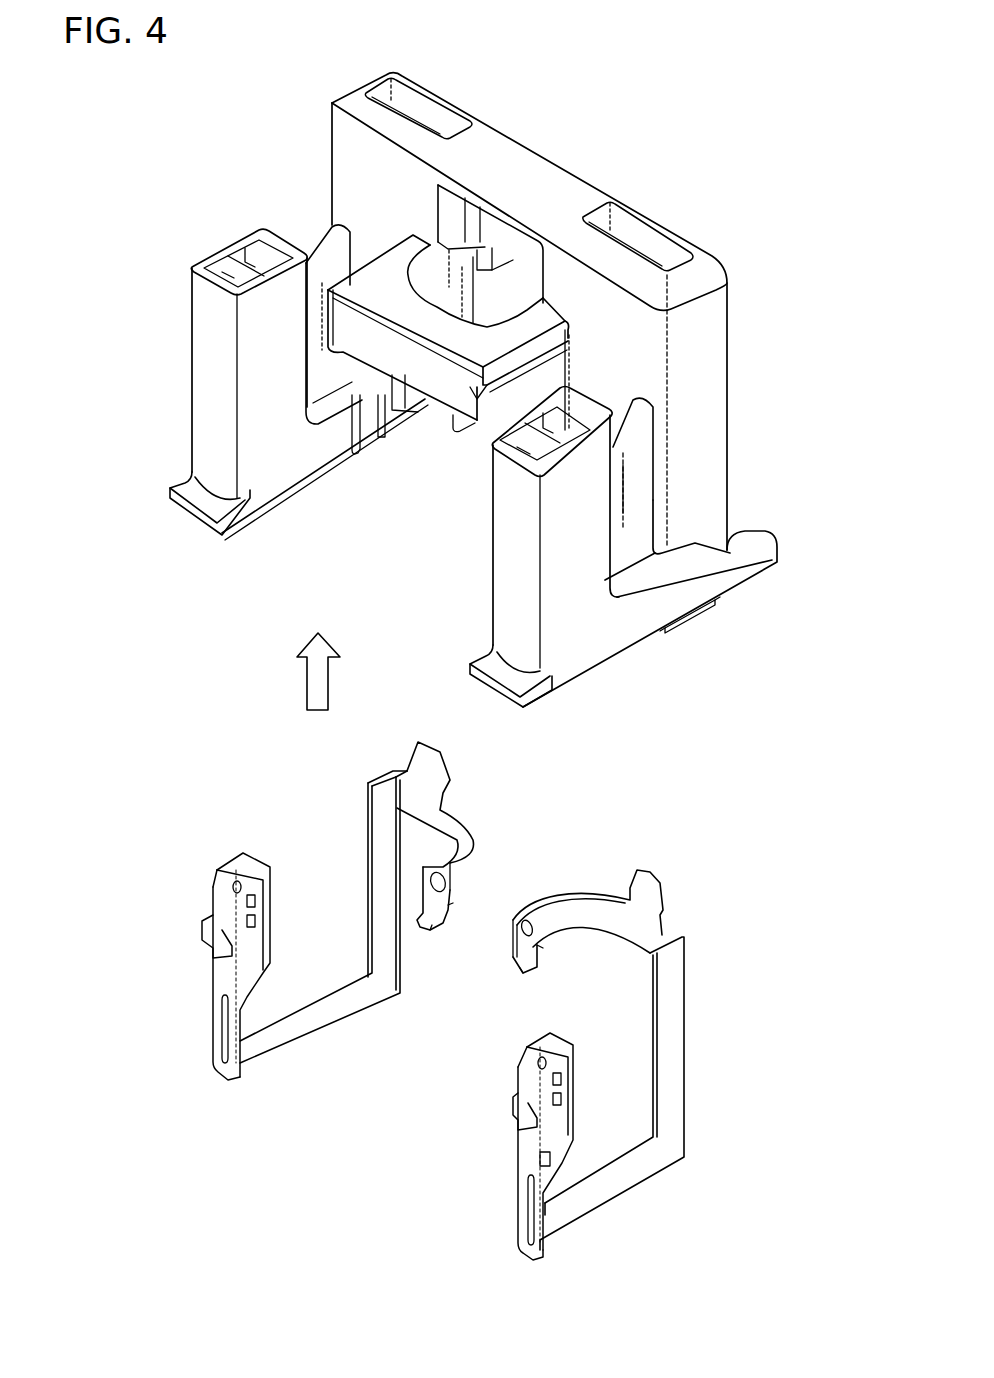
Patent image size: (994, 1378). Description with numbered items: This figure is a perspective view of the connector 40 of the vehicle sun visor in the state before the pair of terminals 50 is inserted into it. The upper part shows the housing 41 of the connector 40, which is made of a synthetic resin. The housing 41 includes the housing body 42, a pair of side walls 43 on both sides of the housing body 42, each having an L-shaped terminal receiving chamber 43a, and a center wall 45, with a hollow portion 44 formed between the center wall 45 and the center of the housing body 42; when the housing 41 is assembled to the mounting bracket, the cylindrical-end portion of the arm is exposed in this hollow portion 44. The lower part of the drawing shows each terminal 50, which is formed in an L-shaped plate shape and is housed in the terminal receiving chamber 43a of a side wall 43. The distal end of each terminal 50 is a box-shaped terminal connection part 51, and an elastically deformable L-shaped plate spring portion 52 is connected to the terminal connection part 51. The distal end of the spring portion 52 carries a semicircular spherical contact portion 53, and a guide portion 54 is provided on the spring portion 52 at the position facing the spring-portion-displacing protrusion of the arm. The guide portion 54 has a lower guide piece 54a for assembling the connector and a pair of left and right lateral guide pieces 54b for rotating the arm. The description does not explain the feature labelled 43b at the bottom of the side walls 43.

The connector 40 is at (581, 102).
The housing 41 is at (342, 96).
The housing body 42 is at (580, 183).
The side wall 43 is at (190, 373).
The terminal receiving chamber 43a is at (232, 262).
The foot portion 43b is at (192, 521).
The hollow portion 44 is at (505, 318).
The center wall 45 is at (383, 283).
The terminal 50 is at (318, 1047).
The terminal connection part 51 is at (212, 908).
The spring portion 52 is at (455, 815).
The contact portion 53 is at (472, 852).
The guide portion 54 is at (448, 921).
The lower guide piece 54a is at (438, 933).
The lateral guide piece 54b is at (455, 905).